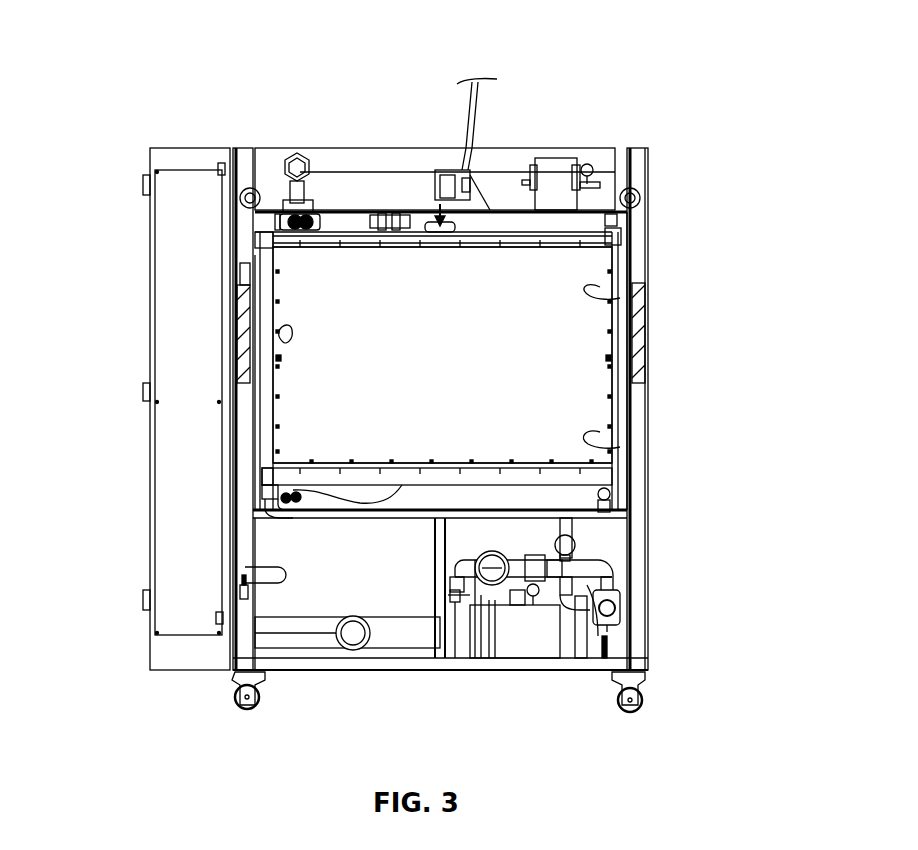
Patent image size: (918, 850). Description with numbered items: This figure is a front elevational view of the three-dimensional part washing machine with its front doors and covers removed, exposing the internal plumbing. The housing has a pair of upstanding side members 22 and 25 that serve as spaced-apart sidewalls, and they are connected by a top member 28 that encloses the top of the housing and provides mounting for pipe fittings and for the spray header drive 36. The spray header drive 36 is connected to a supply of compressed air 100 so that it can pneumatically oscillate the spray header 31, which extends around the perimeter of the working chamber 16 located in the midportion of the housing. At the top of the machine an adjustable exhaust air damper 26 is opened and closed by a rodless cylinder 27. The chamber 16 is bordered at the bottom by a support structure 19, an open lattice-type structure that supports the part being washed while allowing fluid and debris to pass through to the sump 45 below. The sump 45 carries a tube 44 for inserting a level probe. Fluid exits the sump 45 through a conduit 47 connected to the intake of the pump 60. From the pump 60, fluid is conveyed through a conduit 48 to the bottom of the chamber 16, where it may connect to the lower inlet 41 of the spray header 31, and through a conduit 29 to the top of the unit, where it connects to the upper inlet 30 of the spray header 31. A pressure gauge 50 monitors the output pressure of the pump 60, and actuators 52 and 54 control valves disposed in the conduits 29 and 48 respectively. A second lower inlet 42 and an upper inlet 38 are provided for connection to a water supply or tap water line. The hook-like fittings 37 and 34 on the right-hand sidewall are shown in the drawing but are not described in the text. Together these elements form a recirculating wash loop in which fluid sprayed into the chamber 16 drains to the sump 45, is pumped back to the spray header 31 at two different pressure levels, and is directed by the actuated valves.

The supply of compressed air 100 is at (478, 113).
The conduit 29 is at (350, 167).
The upper inlet 38 is at (283, 198).
The inlet 30 is at (305, 205).
The spray header drive 36 is at (440, 172).
The top member 28 is at (508, 220).
The adjustable exhaust air damper 26 is at (552, 168).
The rodless cylinder 27 is at (594, 172).
The side member 22 is at (245, 234).
The side member 25 is at (635, 240).
The hook 37 is at (600, 287).
The spray header 31 is at (283, 342).
The working chamber 16 is at (534, 355).
The lower inlet 41 is at (400, 487).
The support structure 19 is at (352, 465).
The hook 34 is at (600, 432).
The conduit 48 is at (612, 495).
The lower inlet 42 is at (280, 506).
The pressure gauge 50 is at (580, 548).
The actuator 54 is at (620, 600).
The tube 44 is at (258, 578).
The sump 45 is at (326, 578).
The conduit 47 is at (372, 637).
The pump 60 is at (520, 628).
The actuator 52 is at (598, 573).